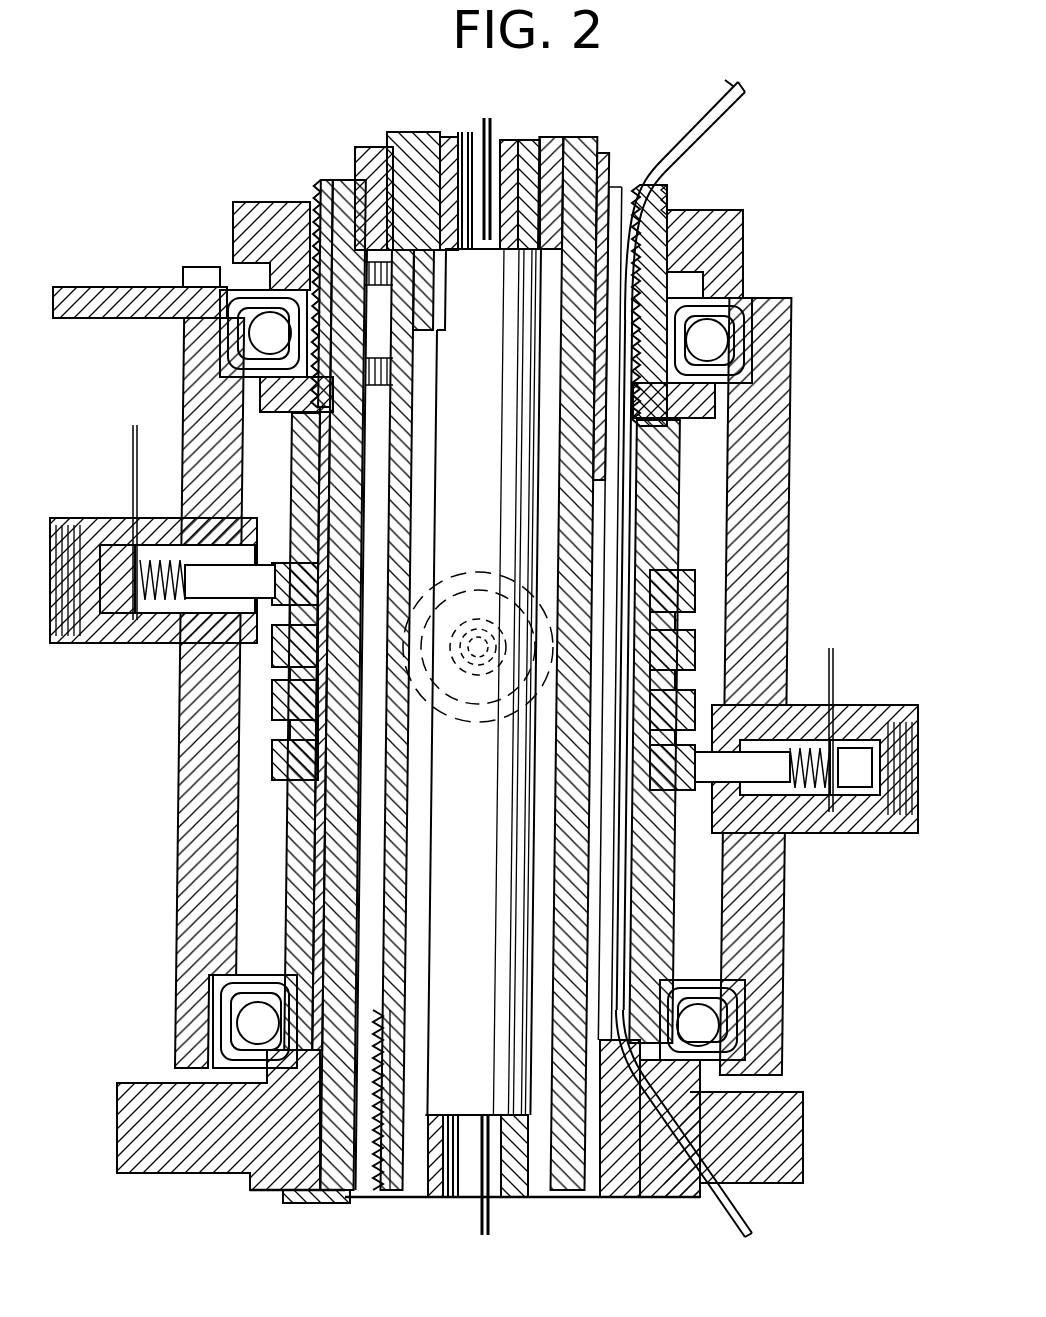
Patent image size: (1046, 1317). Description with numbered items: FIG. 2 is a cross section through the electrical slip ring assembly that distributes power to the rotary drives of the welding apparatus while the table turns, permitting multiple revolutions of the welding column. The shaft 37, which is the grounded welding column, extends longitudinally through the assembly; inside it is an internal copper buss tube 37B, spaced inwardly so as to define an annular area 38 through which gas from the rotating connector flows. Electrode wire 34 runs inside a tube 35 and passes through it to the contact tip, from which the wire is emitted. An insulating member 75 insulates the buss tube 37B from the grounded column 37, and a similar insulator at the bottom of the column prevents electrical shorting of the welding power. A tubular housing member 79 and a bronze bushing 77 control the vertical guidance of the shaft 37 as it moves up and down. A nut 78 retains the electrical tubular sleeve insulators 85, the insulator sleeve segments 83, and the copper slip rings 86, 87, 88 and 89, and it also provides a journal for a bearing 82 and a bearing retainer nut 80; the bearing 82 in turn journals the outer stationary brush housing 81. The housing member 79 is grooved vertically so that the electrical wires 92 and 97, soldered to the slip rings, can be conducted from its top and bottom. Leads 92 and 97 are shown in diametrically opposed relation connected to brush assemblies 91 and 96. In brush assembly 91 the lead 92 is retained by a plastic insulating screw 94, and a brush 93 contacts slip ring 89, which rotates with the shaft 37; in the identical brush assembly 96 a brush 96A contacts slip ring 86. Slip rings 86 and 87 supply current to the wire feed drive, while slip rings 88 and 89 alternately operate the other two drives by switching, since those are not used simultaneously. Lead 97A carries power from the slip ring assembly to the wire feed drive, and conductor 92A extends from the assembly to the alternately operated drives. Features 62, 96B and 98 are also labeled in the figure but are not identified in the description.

The electrode wire 34 is at (492, 140).
The tube 35 is at (462, 140).
The shaft 37 is at (590, 140).
The copper buss tube 37B is at (600, 145).
The annular area 38 is at (540, 150).
The threaded nut 62 is at (385, 1184).
The insulating member 75 is at (420, 140).
The bronze bushing 77 is at (640, 170).
The nut 78 is at (662, 195).
The tubular housing member 79 is at (632, 495).
The bearing retainer nut 80 is at (742, 235).
The outer stationary brush housing 81 is at (790, 430).
The bearing 82 is at (712, 335).
The insulator sleeve segments 83 is at (665, 495).
The electrical tubular sleeve insulators 85 is at (120, 1125).
The slip ring 86 is at (695, 585).
The slip ring 87 is at (695, 648).
The slip ring 88 is at (695, 705).
The slip ring 89 is at (683, 792).
The brush assembly 91 is at (790, 715).
The lead 92 is at (835, 662).
The conductor 92A is at (748, 1237).
The brush 93 is at (770, 770).
The plastic insulating screw 94 is at (880, 800).
The brush assembly 96 is at (160, 640).
The brush 96A is at (205, 590).
The aperture 96B is at (478, 640).
The lead 97 is at (133, 430).
The lead 97A is at (760, 83).
The bore 98 is at (478, 722).